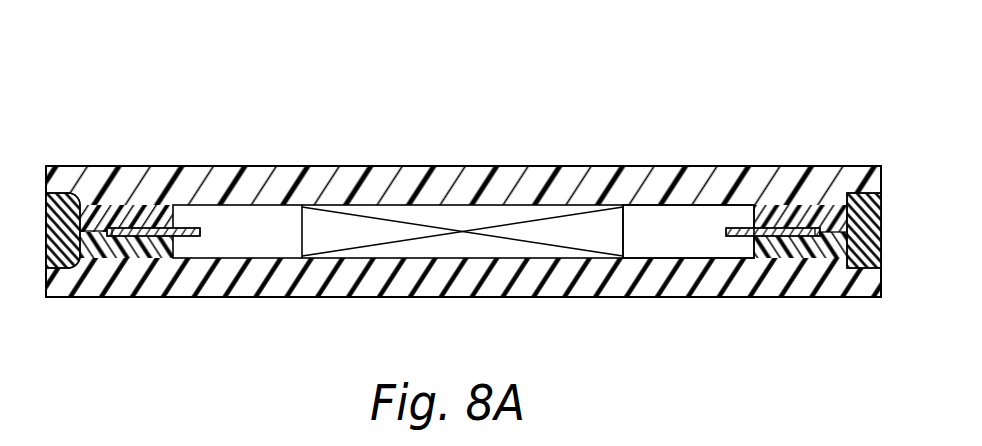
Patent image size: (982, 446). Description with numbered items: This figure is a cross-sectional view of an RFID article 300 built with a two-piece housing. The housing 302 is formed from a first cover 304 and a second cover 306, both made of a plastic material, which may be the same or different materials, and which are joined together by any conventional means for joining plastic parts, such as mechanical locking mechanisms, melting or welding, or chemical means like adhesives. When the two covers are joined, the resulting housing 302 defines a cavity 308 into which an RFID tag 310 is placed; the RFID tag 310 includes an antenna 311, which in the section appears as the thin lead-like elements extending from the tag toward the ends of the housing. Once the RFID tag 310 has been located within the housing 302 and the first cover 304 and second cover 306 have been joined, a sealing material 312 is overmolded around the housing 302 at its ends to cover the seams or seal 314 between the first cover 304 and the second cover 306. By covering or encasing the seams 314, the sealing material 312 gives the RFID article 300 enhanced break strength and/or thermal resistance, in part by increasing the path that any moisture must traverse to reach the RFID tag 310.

The RFID article 300 is at (619, 70).
The housing 302 is at (506, 150).
The first cover 304 is at (741, 158).
The second cover 306 is at (579, 300).
The cavity 308 is at (688, 240).
The RFID tag 310 is at (447, 258).
The antenna 311 is at (108, 232).
The sealing material 312 is at (73, 196).
The seam 314 is at (90, 231).